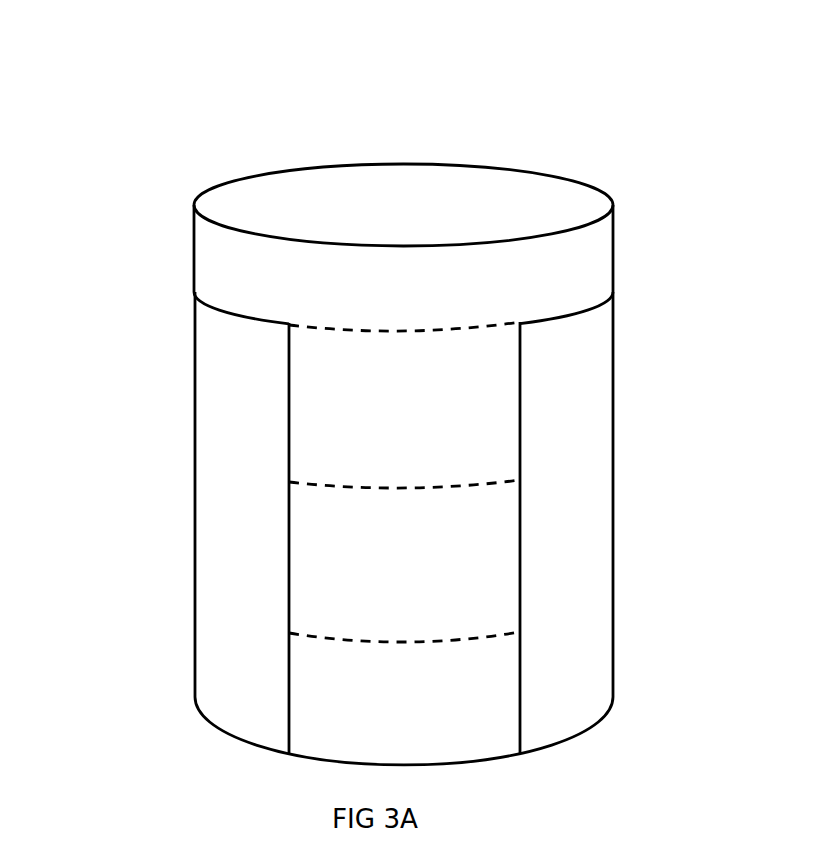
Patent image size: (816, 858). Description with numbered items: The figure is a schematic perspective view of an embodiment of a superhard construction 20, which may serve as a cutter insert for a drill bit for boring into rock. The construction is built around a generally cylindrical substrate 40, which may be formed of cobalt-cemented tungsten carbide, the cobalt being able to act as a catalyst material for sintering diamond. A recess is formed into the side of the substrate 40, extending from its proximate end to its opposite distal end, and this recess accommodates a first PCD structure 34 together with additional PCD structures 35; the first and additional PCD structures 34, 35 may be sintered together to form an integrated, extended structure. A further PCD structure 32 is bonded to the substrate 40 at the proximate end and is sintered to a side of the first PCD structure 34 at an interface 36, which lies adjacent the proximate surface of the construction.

The superhard construction 20 is at (178, 132).
The further PCD structure 32 is at (194, 262).
The first PCD structure 34 is at (340, 408).
The additional PCD structures 35 is at (438, 563).
The interface 36 is at (463, 330).
The substrate 40 is at (198, 503).